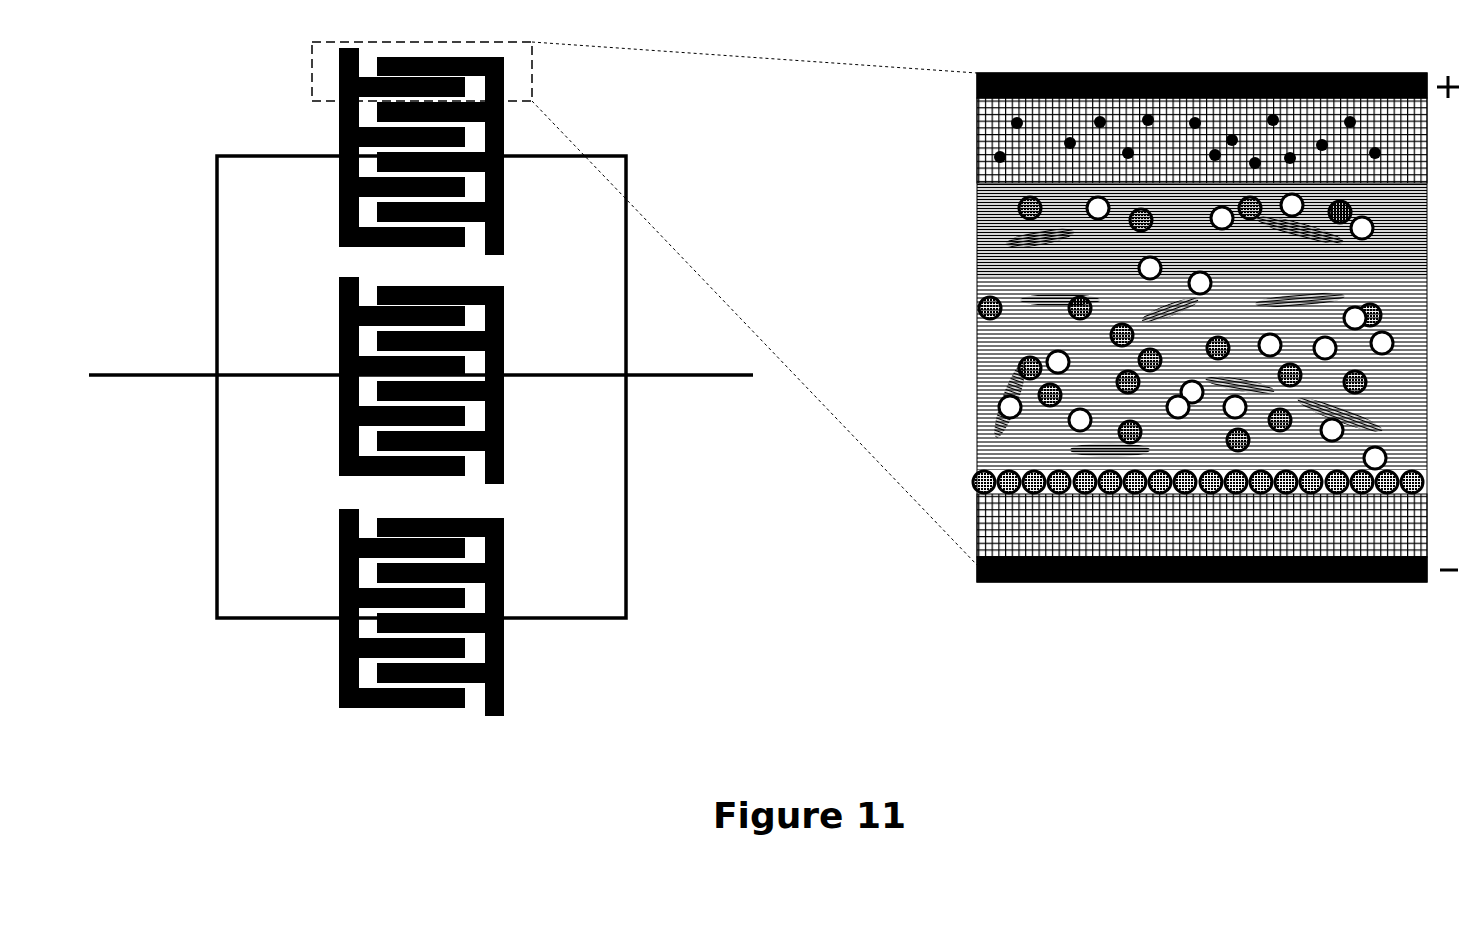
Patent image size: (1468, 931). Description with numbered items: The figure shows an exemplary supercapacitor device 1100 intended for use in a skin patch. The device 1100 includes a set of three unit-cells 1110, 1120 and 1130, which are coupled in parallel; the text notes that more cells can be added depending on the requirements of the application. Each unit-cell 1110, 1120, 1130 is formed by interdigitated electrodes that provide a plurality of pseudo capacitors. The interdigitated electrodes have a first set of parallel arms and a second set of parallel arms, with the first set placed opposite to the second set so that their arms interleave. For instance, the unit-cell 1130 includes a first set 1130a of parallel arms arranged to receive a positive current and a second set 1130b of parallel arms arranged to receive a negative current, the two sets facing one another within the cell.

The supercapacitor device 1100 is at (843, 628).
The unit-cell 1110 is at (339, 115).
The unit-cell 1120 is at (502, 425).
The unit-cell 1130 is at (425, 672).
The first set of parallel arms 1130a is at (534, 638).
The second set of parallel arms 1130b is at (339, 688).